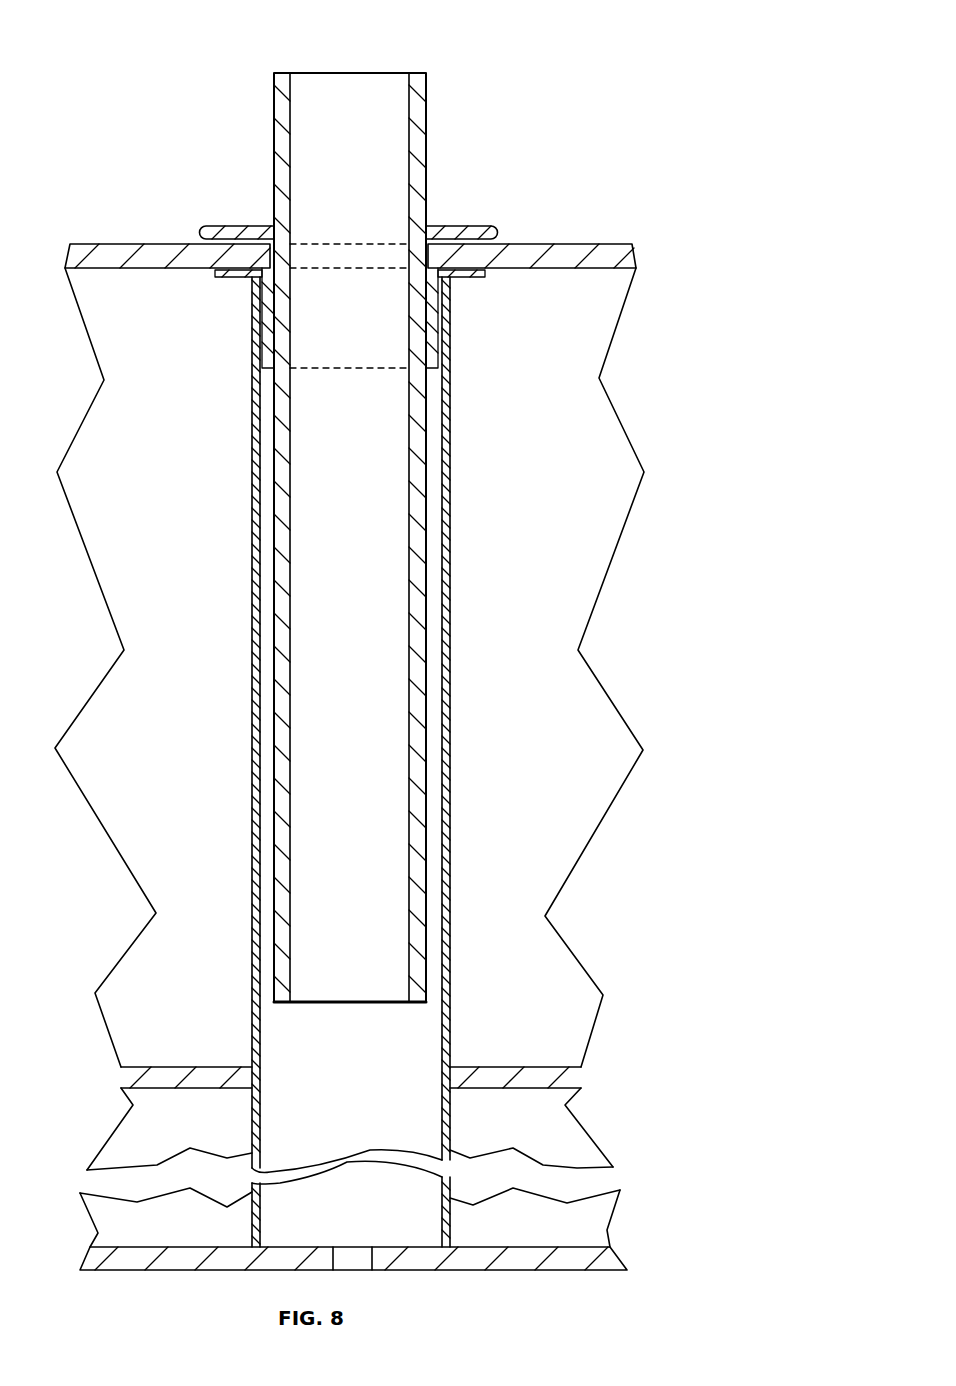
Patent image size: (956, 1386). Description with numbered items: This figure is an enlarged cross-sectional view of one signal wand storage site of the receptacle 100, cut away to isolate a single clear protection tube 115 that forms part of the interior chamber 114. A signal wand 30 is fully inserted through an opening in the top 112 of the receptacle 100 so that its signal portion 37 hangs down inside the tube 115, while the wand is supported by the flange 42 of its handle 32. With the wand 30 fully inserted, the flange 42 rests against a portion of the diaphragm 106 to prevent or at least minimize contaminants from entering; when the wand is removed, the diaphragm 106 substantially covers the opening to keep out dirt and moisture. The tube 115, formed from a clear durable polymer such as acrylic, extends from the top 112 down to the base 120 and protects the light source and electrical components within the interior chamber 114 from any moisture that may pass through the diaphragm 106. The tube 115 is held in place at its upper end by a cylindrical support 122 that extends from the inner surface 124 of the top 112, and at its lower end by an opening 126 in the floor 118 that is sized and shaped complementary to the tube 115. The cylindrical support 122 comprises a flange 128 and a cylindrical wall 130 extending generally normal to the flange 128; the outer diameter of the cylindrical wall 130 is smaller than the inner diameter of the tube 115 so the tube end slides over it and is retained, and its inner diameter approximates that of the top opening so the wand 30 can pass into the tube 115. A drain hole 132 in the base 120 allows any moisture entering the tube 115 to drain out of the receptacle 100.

The signal wand 30 is at (400, 63).
The handle 32 is at (427, 110).
The signal portion 37 is at (417, 548).
The flange 42 is at (440, 225).
The receptacle 100 is at (537, 163).
The diaphragm 106 is at (268, 240).
The top 112 is at (560, 245).
The interior chamber 114 is at (547, 383).
The clear protection tube 115 is at (447, 725).
The floor 118 is at (537, 1063).
The base 120 is at (553, 1253).
The cylindrical support 122 is at (253, 372).
The inner surface 124 is at (134, 270).
The opening 126 is at (450, 1067).
The flange 128 is at (234, 278).
The cylindrical wall 130 is at (434, 353).
The drain hole 132 is at (352, 1257).